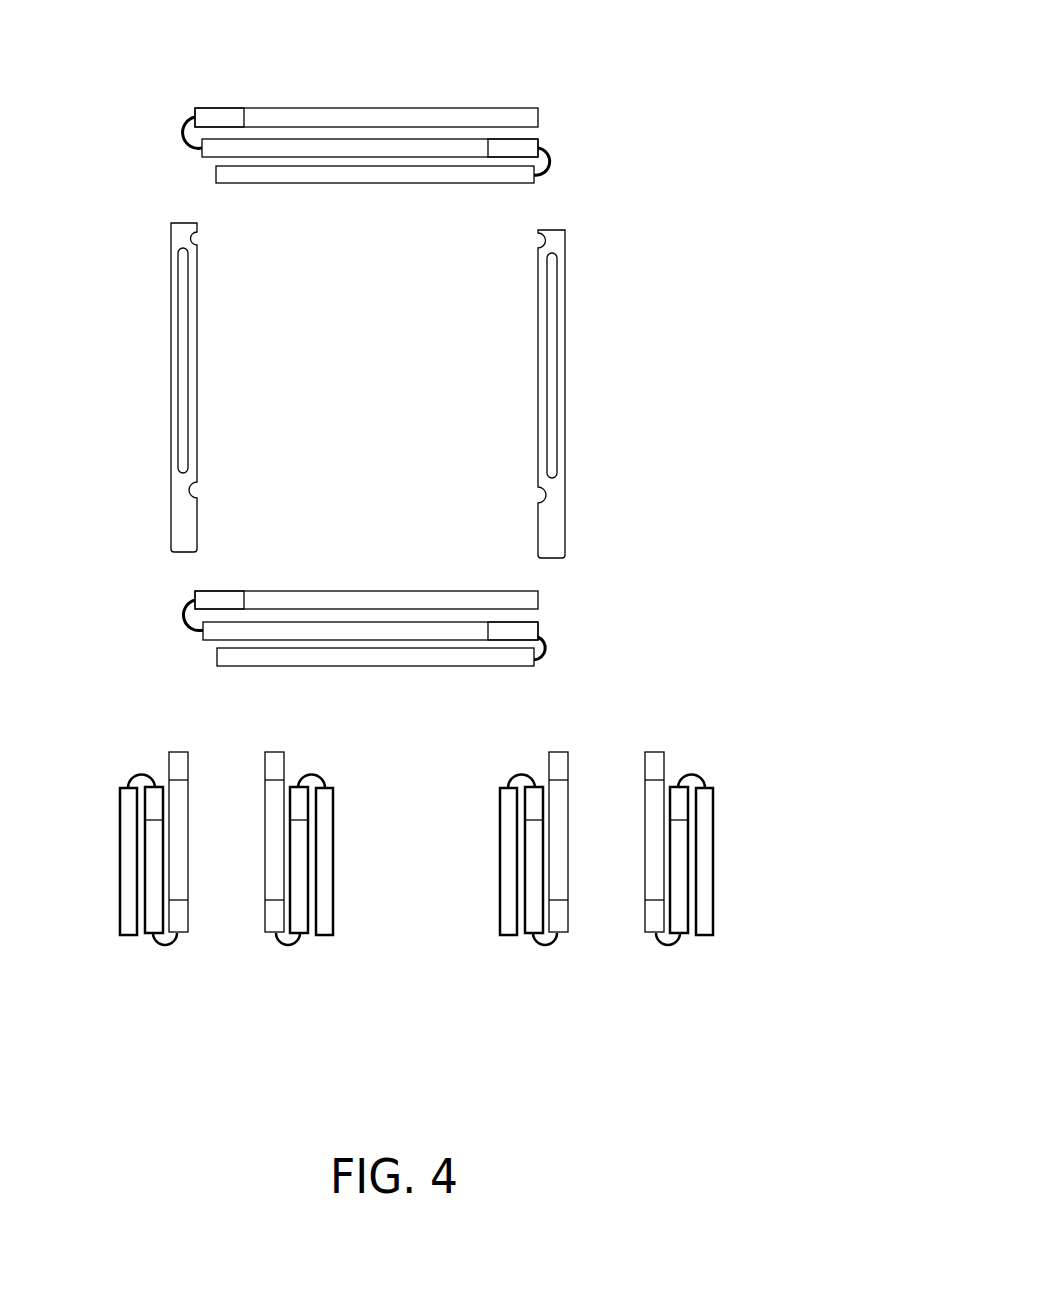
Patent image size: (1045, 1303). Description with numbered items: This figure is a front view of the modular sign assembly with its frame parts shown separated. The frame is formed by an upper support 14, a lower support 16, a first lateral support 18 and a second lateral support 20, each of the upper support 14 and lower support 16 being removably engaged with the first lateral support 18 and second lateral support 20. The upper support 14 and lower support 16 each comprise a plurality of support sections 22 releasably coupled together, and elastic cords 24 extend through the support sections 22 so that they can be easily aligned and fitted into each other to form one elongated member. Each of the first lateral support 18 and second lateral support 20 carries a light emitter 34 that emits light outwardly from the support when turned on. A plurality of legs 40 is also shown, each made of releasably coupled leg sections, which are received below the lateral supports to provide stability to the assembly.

The upper support 14 is at (524, 99).
The lower support 16 is at (430, 604).
The first lateral support 18 is at (627, 394).
The second lateral support 20 is at (171, 477).
The support sections 22 is at (368, 648).
The elastic cords 24 is at (552, 160).
The light emitter 34 is at (551, 466).
The legs 40 is at (637, 953).